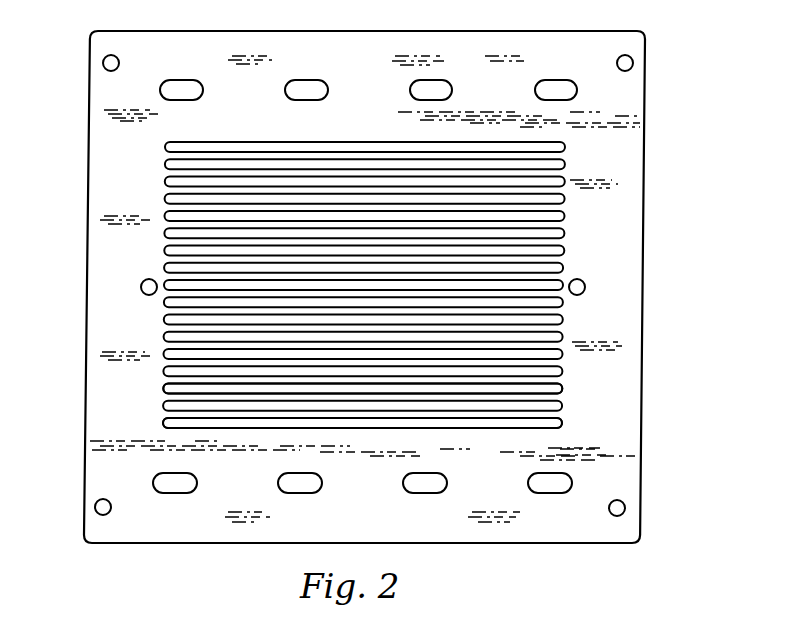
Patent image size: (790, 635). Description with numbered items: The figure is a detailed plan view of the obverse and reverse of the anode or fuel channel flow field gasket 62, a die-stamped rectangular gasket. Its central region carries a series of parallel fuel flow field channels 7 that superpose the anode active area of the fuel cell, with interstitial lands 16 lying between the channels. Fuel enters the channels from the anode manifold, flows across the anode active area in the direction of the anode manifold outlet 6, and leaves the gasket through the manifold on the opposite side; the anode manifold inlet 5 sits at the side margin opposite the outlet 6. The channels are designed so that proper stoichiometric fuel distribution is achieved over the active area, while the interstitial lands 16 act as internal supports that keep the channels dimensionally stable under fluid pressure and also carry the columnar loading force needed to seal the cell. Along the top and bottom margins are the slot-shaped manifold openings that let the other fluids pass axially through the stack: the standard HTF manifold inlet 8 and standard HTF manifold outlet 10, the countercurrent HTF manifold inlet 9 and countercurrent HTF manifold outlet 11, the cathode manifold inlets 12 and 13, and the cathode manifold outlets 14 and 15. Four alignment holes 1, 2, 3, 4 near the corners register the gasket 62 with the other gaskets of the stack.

The alignment hole 1 is at (103, 63).
The alignment hole 2 is at (633, 63).
The alignment hole 3 is at (625, 507).
The alignment hole 4 is at (95, 507).
The anode manifold inlet 5 is at (141, 287).
The anode manifold outlet 6 is at (585, 286).
The fuel flow field channels 7 is at (163, 427).
The standard HTF manifold inlet 8 is at (182, 84).
The countercurrent HTF manifold inlet 9 is at (556, 84).
The standard HTF manifold outlet 10 is at (543, 489).
The countercurrent HTF manifold outlet 11 is at (170, 489).
The cathode manifold inlet 12 is at (308, 84).
The cathode manifold inlet 13 is at (431, 84).
The cathode manifold outlet 14 is at (420, 489).
The cathode manifold outlet 15 is at (296, 489).
The interstitial lands 16 is at (163, 181).
The anode channel flow field gasket 62 is at (683, 218).